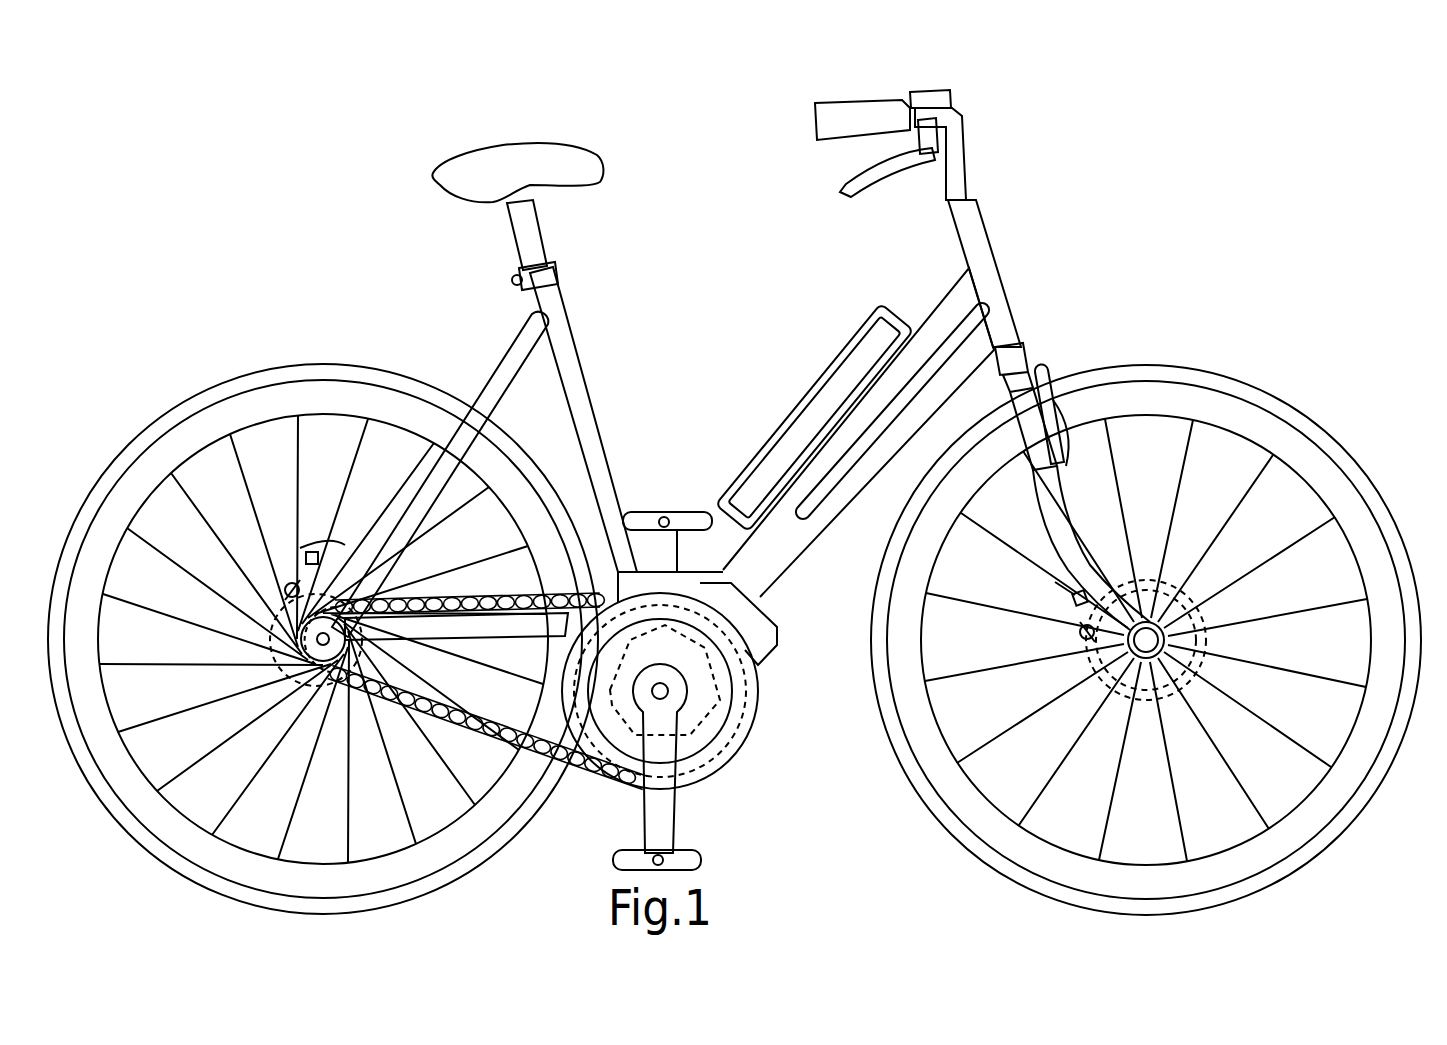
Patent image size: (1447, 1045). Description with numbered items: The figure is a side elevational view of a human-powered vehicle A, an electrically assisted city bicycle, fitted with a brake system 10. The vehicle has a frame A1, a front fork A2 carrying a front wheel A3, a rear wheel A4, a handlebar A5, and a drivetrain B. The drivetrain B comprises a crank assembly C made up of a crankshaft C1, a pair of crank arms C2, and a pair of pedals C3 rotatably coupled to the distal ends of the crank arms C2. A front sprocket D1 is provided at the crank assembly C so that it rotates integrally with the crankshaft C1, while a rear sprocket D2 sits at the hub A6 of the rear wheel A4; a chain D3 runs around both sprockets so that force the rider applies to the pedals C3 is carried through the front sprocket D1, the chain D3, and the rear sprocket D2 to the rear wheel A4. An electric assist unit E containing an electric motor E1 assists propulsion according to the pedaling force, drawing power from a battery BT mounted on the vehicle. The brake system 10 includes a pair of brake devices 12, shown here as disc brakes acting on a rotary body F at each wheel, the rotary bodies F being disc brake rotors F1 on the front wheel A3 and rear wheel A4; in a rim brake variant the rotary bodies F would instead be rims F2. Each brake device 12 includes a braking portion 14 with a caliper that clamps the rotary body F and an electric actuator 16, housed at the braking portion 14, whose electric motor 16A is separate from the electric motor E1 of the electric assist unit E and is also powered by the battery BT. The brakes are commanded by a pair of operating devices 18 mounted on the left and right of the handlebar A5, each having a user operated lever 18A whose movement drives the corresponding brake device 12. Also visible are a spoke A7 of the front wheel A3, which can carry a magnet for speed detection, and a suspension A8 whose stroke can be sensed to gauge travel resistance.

The human-powered vehicle A is at (1094, 86).
The brake system 10 is at (1137, 233).
The frame A1 is at (582, 366).
The front fork A2 is at (1072, 510).
The front wheel A3 is at (1231, 376).
The rear wheel A4 is at (266, 378).
The handlebar A5 is at (838, 103).
The hub A6 is at (340, 639).
The spoke A7 is at (1190, 470).
The suspension A8 is at (1062, 415).
The battery BT is at (800, 402).
The crank assembly C is at (786, 757).
The crankshaft C1 is at (675, 690).
The crank arms C2 is at (680, 552).
The pedals C3 is at (678, 510).
The front sprocket D1 is at (612, 773).
The rear sprocket D2 is at (286, 690).
The chain D3 is at (422, 735).
The electric assist unit E is at (772, 613).
The electric motor E1 is at (780, 647).
The rotary body F is at (736, 640).
The disc brake rotor F1 is at (1205, 615).
The rim F2 is at (193, 412).
The brake device 12 is at (333, 524).
The braking portion 14 is at (290, 582).
The electric actuator 16 is at (660, 510).
The electric motor 16A is at (1055, 583).
The operating device 18 is at (889, 192).
The lever 18A is at (903, 175).
The drivetrain B is at (752, 856).